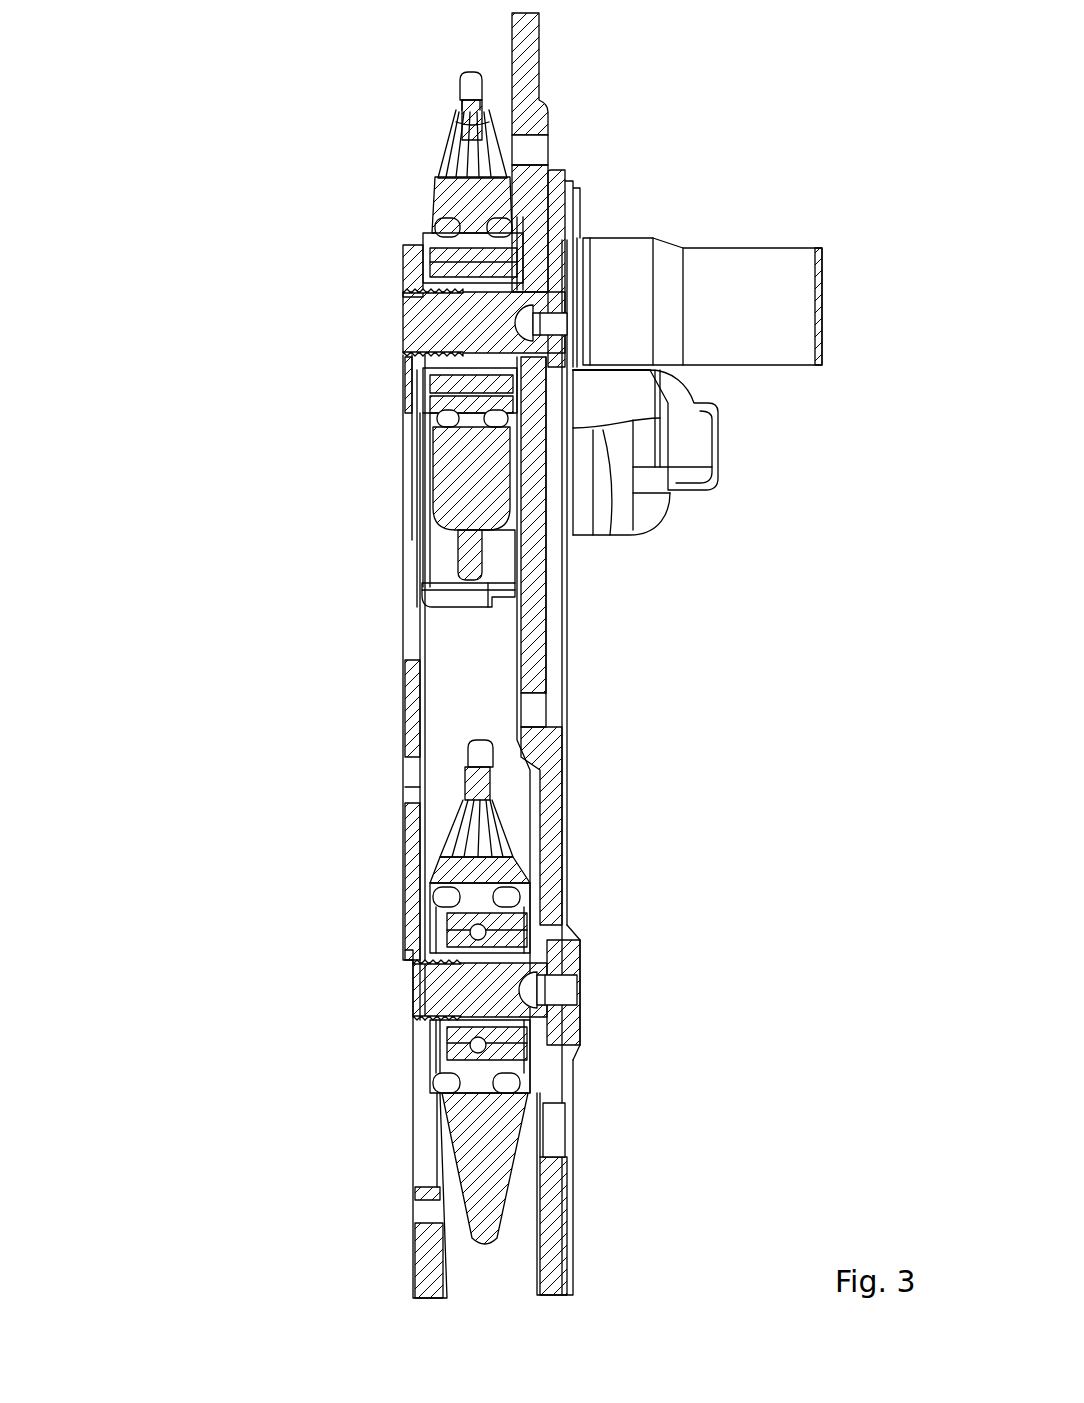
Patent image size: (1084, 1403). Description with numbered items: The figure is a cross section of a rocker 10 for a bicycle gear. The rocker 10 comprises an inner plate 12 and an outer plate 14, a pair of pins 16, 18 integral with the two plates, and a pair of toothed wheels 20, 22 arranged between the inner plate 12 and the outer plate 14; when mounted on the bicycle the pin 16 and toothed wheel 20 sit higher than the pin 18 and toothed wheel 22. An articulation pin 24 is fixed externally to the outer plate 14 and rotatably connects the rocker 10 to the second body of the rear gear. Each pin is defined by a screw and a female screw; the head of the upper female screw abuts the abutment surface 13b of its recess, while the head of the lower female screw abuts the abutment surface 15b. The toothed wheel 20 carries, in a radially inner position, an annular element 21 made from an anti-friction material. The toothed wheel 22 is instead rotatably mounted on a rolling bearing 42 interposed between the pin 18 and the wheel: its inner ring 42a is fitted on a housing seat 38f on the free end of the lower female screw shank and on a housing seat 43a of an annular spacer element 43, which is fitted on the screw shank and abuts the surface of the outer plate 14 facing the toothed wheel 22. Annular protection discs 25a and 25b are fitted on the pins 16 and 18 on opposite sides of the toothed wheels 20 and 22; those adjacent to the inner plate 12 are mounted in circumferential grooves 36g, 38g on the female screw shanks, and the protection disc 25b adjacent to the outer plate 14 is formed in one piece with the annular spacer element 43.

The rocker 10 is at (228, 118).
The inner plate 12 is at (383, 694).
The abutment surface 13b is at (403, 262).
The outer plate 14 is at (598, 702).
The abutment surface 15b is at (422, 933).
The pin 16 is at (370, 301).
The pin 18 is at (358, 996).
The toothed wheel 20 is at (452, 107).
The annular element 21 is at (438, 192).
The toothed wheel 22 is at (493, 1147).
The articulation pin 24 is at (767, 324).
The annular protection disc 25a is at (423, 236).
The annular protection disc 25b is at (423, 1073).
The circumferential groove 36g is at (403, 326).
The housing seat 38f is at (418, 948).
The circumferential groove 38g is at (422, 1013).
The rolling bearing 42 is at (567, 1065).
The inner ring 42a is at (574, 1023).
The annular spacer element 43 is at (567, 918).
The housing seat 43a is at (574, 954).